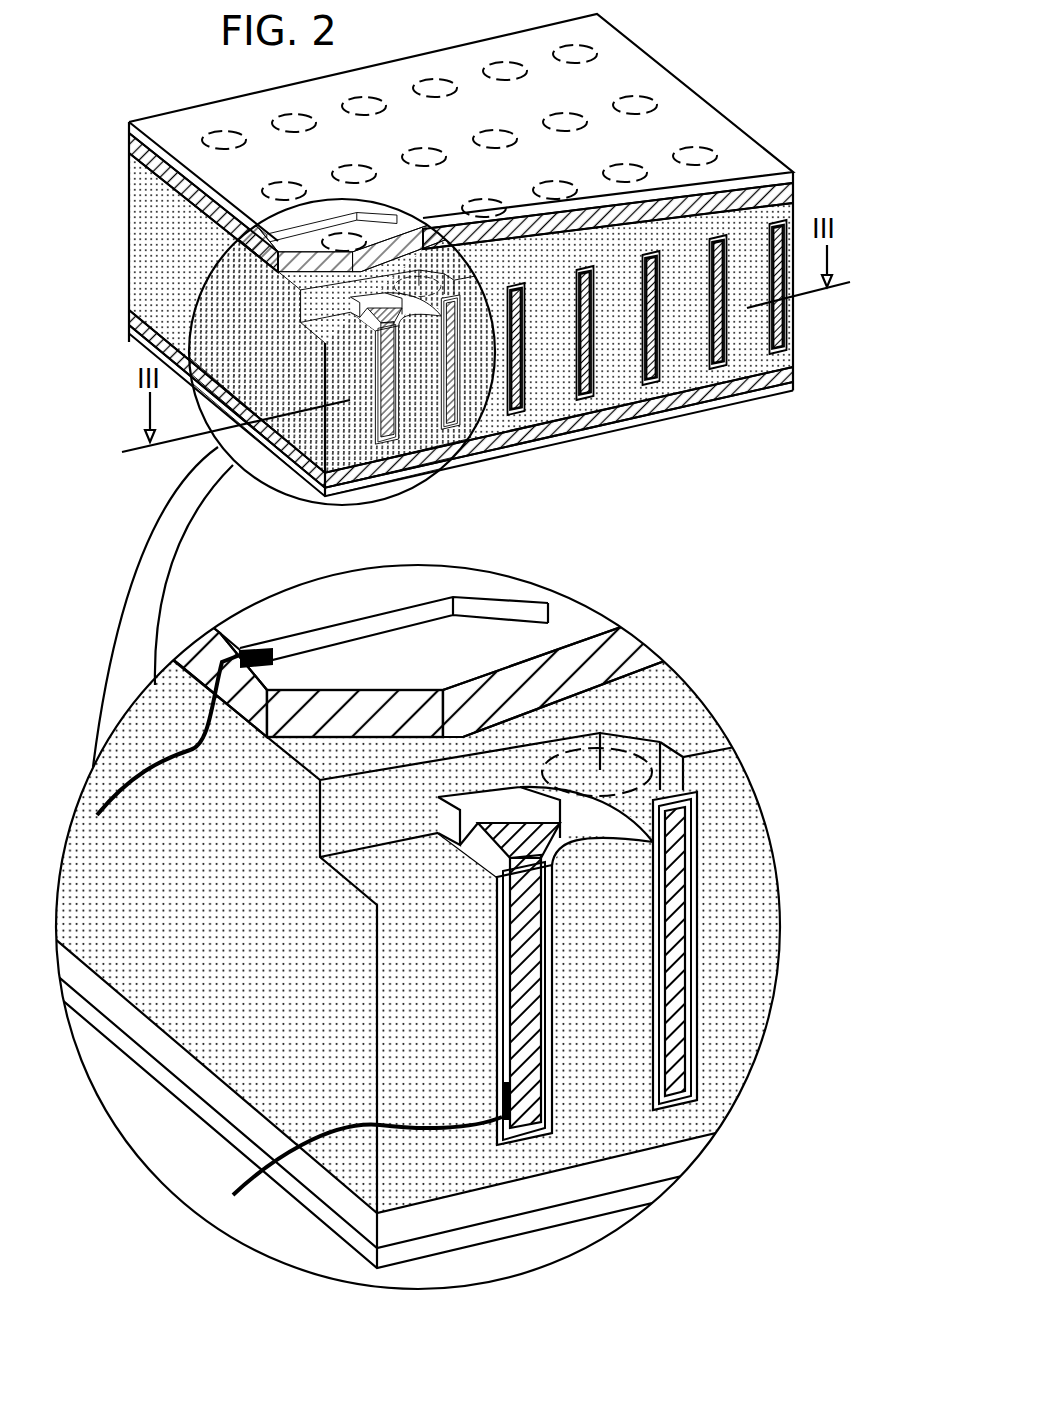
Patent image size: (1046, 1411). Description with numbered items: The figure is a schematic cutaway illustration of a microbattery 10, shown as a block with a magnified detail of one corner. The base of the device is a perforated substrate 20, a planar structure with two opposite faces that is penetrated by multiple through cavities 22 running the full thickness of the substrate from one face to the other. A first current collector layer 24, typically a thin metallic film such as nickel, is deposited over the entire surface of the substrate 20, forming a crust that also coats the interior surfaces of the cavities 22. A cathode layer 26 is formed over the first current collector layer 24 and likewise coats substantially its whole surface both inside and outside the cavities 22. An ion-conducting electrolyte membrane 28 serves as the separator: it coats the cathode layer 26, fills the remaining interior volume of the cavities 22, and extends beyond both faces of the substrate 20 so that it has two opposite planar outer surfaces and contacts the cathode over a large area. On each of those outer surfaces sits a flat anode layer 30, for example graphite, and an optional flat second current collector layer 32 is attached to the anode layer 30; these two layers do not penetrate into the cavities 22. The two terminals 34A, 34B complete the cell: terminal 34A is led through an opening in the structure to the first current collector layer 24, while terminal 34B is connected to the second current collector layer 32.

The microbattery 10 is at (737, 77).
The perforated substrate 20 is at (778, 355).
The through cavities 22 is at (643, 105).
The first current collector layer 24 is at (556, 845).
The cathode layer 26 is at (665, 777).
The ion-conducting electrolyte membrane 28 is at (129, 222).
The anode layer 30 is at (129, 141).
The second current collector layer 32 is at (129, 125).
The terminal 34A is at (237, 1190).
The terminal 34B is at (178, 756).